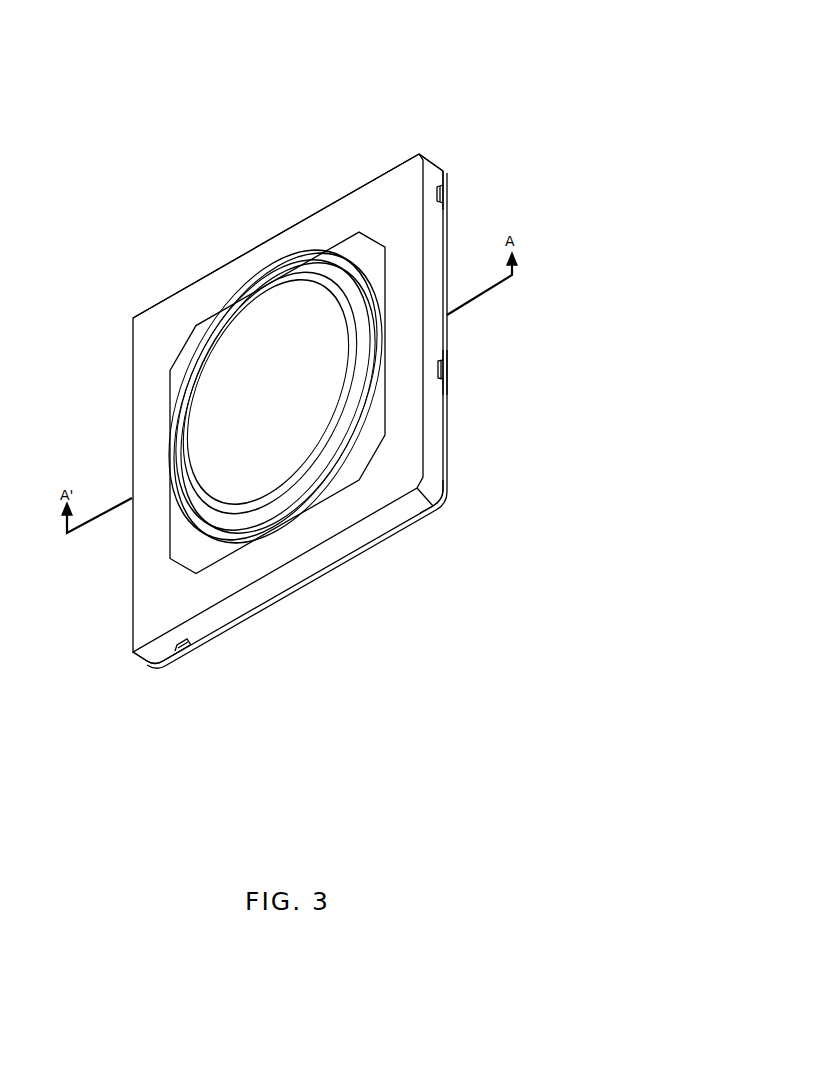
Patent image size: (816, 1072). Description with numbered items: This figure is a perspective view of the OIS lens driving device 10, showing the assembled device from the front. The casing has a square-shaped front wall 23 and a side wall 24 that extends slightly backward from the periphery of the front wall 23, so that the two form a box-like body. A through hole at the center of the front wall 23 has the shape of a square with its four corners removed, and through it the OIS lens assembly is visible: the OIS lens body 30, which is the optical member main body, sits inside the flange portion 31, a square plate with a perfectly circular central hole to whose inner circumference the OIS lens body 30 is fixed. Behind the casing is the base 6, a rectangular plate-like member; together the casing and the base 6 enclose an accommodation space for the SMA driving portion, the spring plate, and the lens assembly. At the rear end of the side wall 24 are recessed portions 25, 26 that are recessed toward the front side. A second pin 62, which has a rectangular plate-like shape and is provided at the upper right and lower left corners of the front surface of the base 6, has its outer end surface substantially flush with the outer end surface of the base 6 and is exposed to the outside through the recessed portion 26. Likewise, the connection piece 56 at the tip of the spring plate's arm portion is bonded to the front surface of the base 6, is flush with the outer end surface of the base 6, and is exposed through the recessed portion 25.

The OIS lens driving device 10 is at (121, 306).
The front wall 23 is at (400, 172).
The side wall 24 is at (433, 276).
The recessed portion 26 is at (447, 205).
The second pin 62 is at (444, 197).
The connection piece 56 is at (446, 362).
The recessed portion 25 is at (449, 378).
The base 6 is at (435, 508).
The flange portion 31 is at (362, 253).
The OIS lens body 30 is at (262, 348).